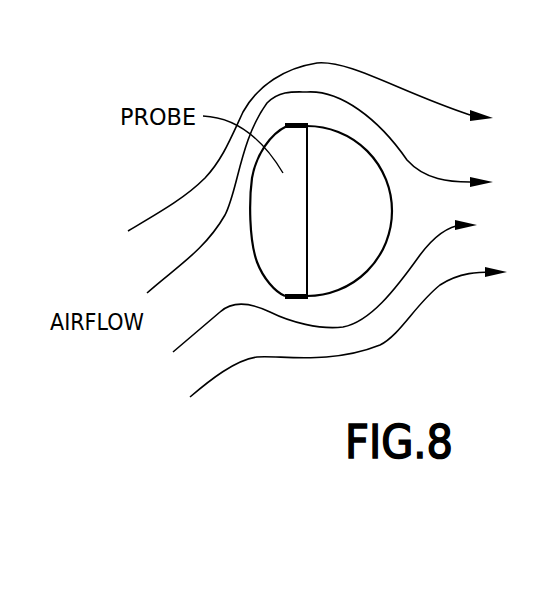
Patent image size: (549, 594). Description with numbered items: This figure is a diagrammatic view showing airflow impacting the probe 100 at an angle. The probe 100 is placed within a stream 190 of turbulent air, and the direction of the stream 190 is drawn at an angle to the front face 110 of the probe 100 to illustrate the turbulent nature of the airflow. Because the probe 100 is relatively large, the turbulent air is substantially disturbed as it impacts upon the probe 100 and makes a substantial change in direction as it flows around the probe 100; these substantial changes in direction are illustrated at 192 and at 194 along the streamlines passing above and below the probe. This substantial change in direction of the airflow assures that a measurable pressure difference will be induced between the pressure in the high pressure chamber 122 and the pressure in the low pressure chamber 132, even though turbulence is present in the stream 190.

The probe 100 is at (322, 172).
The front face 110 is at (296, 211).
The high pressure chamber 122 is at (298, 228).
The low pressure chamber 132 is at (367, 216).
The stream 190 is at (163, 338).
The change in direction 192 is at (232, 333).
The change in direction 194 is at (274, 86).